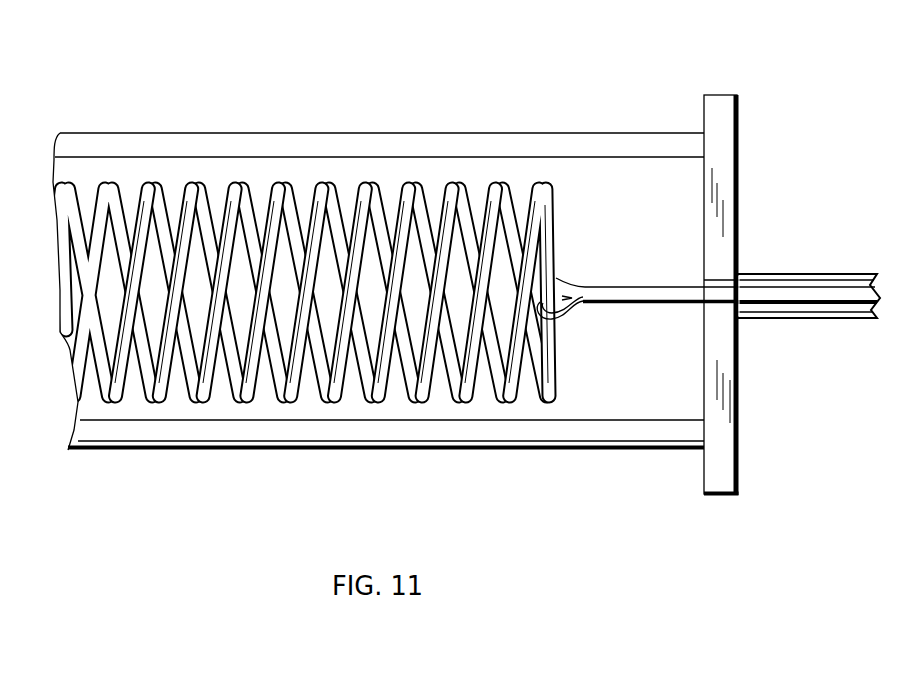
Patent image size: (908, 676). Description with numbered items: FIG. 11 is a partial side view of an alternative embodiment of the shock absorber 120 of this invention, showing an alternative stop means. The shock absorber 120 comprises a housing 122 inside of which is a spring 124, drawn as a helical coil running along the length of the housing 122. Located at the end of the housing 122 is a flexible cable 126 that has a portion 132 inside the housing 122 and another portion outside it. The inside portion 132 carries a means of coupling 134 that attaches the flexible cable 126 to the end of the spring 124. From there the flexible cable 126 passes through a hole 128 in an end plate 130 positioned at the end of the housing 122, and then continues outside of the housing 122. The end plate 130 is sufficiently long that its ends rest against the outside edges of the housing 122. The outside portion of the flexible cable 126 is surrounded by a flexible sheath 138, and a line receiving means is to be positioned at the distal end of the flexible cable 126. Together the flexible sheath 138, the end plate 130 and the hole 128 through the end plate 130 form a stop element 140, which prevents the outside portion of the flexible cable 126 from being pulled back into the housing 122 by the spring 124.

The shock absorber 120 is at (352, 252).
The housing 122 is at (410, 145).
The spring 124 is at (463, 380).
The flexible cable 126 is at (664, 242).
The hole 128 is at (698, 286).
The end plate 130 is at (720, 437).
The portion inside the housing 132 is at (635, 297).
The means of coupling 134 is at (567, 330).
The flexible sheath 138 is at (800, 313).
The stop element 140 is at (754, 243).